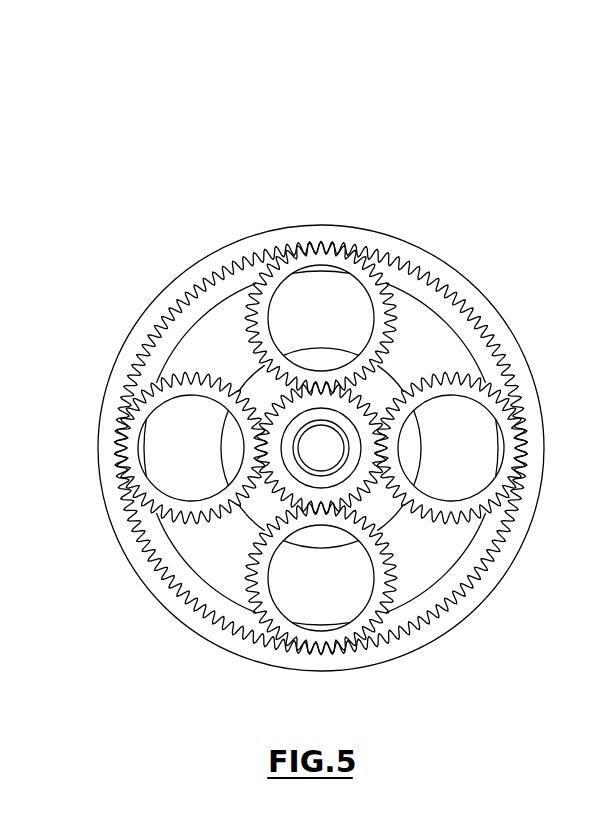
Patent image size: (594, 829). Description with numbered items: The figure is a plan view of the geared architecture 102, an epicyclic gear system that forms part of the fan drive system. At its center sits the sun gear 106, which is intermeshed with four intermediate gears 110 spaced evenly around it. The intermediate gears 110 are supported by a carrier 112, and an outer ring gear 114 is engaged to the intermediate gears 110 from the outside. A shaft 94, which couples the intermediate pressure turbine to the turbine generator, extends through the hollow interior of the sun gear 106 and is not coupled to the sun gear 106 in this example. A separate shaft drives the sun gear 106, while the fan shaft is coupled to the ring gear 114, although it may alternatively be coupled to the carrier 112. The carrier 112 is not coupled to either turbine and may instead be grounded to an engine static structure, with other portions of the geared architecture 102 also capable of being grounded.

The geared architecture 102 is at (312, 418).
The shaft 94 is at (352, 425).
The sun gear 106 is at (287, 483).
The intermediate gears 110 is at (302, 260).
The carrier 112 is at (420, 343).
The ring gear 114 is at (440, 627).